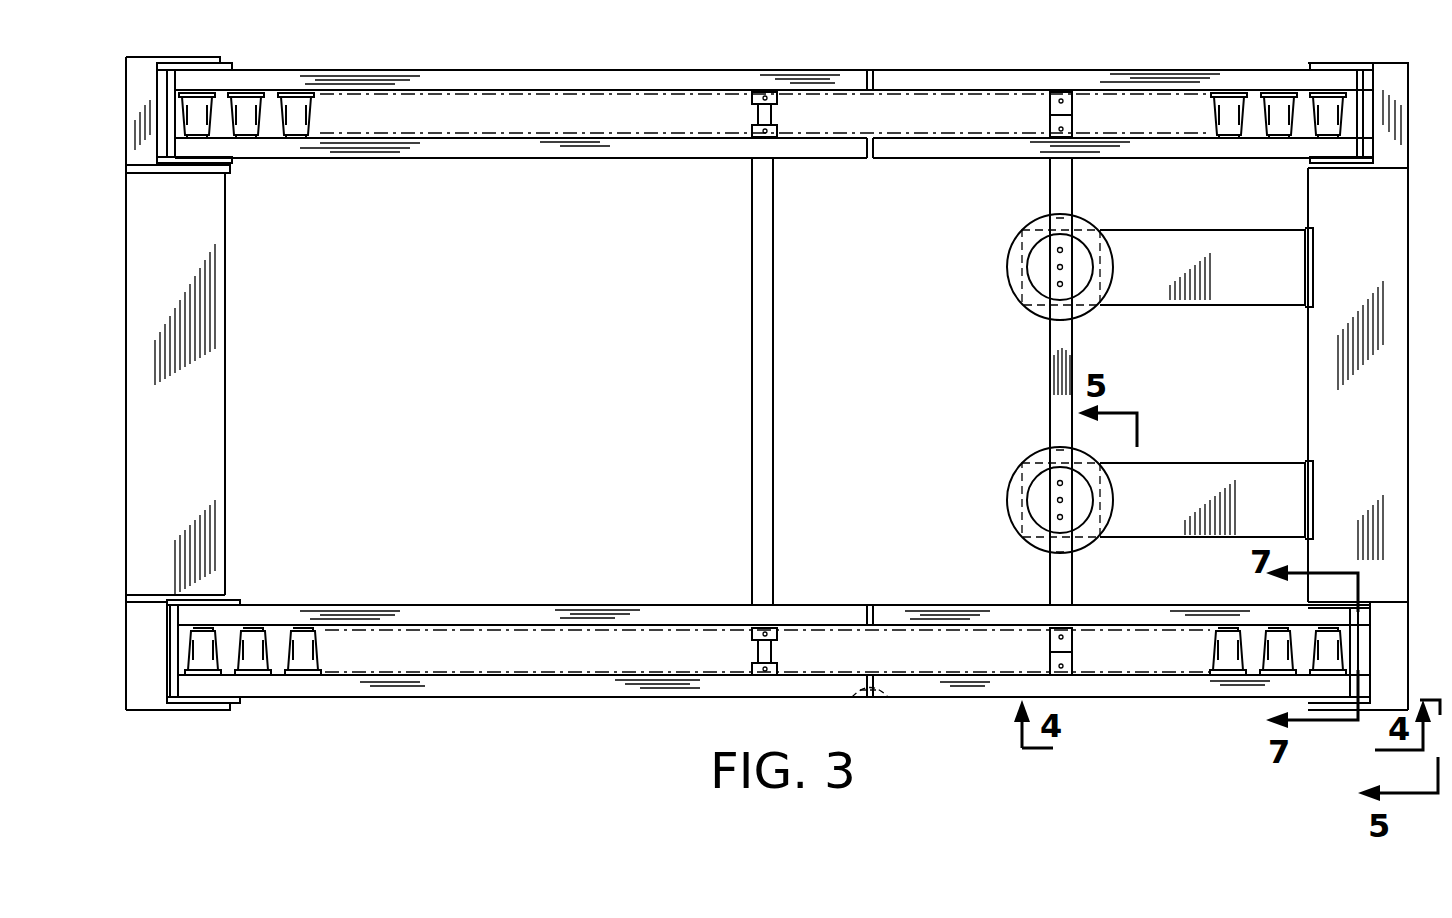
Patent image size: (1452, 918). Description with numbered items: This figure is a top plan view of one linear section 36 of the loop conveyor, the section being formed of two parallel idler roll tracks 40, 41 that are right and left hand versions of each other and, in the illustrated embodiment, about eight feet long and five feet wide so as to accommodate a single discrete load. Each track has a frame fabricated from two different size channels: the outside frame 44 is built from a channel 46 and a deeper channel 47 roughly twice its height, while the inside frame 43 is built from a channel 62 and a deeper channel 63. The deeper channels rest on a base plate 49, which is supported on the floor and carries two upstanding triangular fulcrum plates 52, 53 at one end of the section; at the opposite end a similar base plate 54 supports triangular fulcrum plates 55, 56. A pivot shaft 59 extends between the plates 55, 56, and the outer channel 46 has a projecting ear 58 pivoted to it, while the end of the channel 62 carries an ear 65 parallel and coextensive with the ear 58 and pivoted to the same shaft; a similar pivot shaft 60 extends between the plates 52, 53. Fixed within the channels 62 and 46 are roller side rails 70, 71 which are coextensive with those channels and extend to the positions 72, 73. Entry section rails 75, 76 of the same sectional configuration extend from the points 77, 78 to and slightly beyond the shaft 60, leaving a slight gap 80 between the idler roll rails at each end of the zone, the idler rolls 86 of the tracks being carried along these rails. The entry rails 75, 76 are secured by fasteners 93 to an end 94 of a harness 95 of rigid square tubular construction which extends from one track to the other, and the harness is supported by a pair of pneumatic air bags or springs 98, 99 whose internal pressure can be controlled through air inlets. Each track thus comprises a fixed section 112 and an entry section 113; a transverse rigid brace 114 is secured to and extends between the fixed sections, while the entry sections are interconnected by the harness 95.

The linear section 36 is at (1266, 58).
The idler roll track 40 is at (771, 62).
The idler roll track 41 is at (553, 705).
The inside frame 43 is at (532, 600).
The outside frame 44 is at (475, 705).
The channel 46 is at (405, 698).
The channel 47 is at (983, 698).
The base plate 49 is at (1393, 508).
The upstanding triangular fulcrum plate 52 is at (1385, 706).
The upstanding triangular fulcrum plate 53 is at (1365, 600).
The base plate 54 is at (203, 463).
The upstanding triangular fulcrum plate 55 is at (147, 713).
The upstanding triangular fulcrum plate 56 is at (205, 590).
The projecting ear 58 is at (165, 698).
The pivot shaft 59 is at (163, 620).
The pivot shaft 60 is at (1363, 662).
The channel 62 is at (450, 605).
The deeper channel 63 is at (1028, 578).
The ear 65 is at (183, 605).
The roller side rail 70 is at (645, 618).
The roller side rail 71 is at (655, 693).
The position 72 is at (858, 605).
The position 73 is at (845, 700).
The entry section rail 75 is at (1106, 697).
The entry section rail 76 is at (975, 608).
The point 77 is at (905, 700).
The point 78 is at (885, 605).
The gap 80 is at (879, 62).
The roller 86 is at (305, 117).
The fasteners 93 is at (1073, 638).
The end of harness 94 is at (1073, 652).
The harness 95 is at (1057, 423).
The pneumatic air spring 98 is at (1108, 245).
The pneumatic air spring 99 is at (1110, 487).
The fixed section 112 is at (380, 62).
The entry section 113 is at (1145, 62).
The transverse rigid brace 114 is at (760, 448).